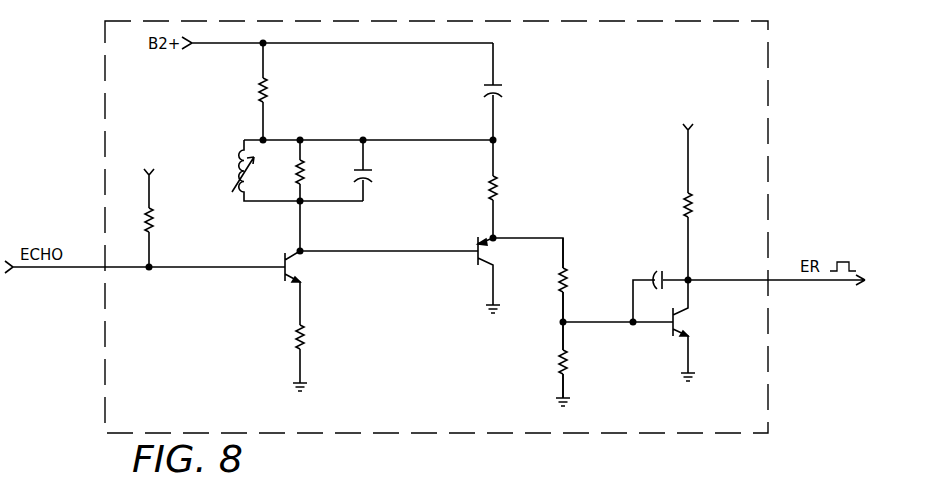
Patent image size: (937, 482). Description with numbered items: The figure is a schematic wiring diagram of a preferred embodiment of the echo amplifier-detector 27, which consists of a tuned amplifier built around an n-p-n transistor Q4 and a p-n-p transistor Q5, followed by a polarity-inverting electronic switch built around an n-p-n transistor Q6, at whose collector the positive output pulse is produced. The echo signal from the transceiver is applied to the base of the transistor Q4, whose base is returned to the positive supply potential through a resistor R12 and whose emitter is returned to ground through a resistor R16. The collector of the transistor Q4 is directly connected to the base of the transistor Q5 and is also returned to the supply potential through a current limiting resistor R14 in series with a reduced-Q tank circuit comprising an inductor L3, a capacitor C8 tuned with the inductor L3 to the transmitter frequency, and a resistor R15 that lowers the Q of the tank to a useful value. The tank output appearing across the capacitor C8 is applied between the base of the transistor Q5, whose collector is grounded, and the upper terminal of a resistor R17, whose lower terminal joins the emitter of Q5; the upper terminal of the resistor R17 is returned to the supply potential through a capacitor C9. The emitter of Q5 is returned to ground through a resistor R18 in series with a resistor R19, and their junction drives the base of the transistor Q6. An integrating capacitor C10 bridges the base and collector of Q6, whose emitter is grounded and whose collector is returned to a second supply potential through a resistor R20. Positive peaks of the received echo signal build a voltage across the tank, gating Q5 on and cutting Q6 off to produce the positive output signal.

The echo amplifier-detector 27 is at (184, 420).
The resistor R12 is at (158, 209).
The current limiting resistor R14 is at (245, 91).
The resistor R15 is at (315, 170).
The inductor L3 is at (297, 170).
The capacitor C8 is at (375, 170).
The capacitor C9 is at (504, 91).
The resistor R17 is at (509, 189).
The n-p-n transistor Q4 is at (237, 275).
The resistor R16 is at (315, 345).
The p-n-p transistor Q5 is at (497, 275).
The resistor R18 is at (546, 280).
The resistor R19 is at (579, 364).
The integrating capacitor C10 is at (660, 287).
The n-p-n transistor Q6 is at (692, 330).
The resistor R20 is at (698, 193).